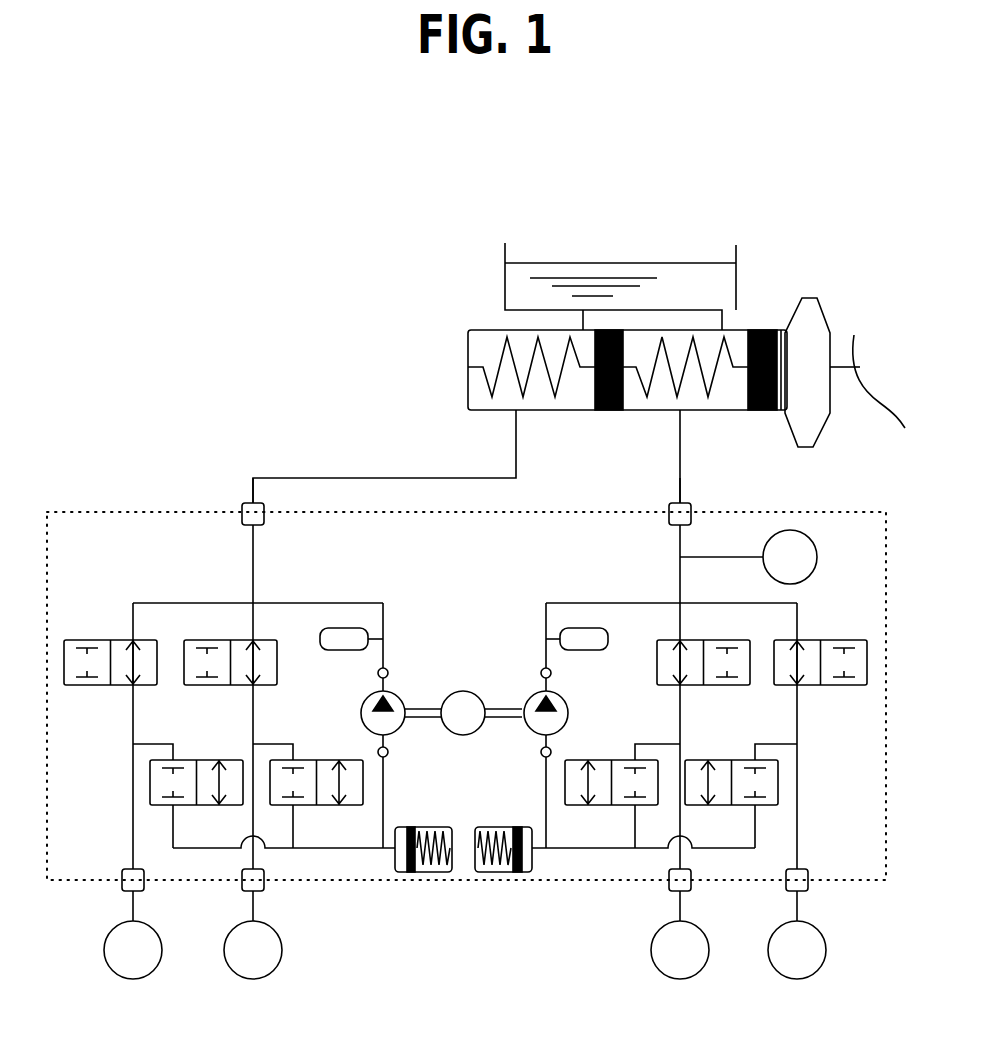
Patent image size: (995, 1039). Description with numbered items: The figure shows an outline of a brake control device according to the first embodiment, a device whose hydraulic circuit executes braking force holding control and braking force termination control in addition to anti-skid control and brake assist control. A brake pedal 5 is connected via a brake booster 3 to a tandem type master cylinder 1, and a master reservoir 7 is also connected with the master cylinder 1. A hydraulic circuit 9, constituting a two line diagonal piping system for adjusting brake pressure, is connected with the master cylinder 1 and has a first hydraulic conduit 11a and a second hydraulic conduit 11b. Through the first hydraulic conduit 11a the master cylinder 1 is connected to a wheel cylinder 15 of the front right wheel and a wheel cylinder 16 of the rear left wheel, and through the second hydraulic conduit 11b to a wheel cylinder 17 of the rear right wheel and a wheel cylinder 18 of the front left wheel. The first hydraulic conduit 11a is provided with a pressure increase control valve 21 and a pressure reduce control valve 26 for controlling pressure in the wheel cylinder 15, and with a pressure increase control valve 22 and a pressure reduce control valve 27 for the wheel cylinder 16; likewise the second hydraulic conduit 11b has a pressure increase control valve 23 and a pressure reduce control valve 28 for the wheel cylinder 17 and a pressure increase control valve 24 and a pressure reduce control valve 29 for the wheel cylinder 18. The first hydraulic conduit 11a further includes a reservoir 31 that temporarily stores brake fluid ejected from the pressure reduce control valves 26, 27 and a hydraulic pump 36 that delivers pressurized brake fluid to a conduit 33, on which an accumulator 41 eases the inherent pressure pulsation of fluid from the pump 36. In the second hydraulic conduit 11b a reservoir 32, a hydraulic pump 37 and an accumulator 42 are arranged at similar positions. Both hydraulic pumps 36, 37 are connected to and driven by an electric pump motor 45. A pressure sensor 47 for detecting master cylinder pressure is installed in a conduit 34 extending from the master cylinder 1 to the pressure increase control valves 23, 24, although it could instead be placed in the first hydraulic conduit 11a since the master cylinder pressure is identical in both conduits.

The master cylinder 1 is at (468, 350).
The brake booster 3 is at (806, 298).
The brake pedal 5 is at (890, 395).
The master reservoir 7 is at (505, 268).
The hydraulic circuit 9 is at (113, 512).
The first hydraulic conduit 11a is at (307, 566).
The second hydraulic conduit 11b is at (835, 595).
The wheel cylinder 15 is at (133, 980).
The wheel cylinder 16 is at (253, 980).
The wheel cylinder 17 is at (680, 980).
The wheel cylinder 18 is at (797, 980).
The pressure increase control valve 21 is at (75, 640).
The pressure increase control valve 22 is at (258, 640).
The pressure increase control valve 23 is at (710, 640).
The pressure increase control valve 24 is at (825, 640).
The pressure reduce control valve 26 is at (188, 760).
The pressure reduce control valve 27 is at (298, 760).
The pressure reduce control valve 28 is at (580, 760).
The pressure reduce control valve 29 is at (700, 760).
The reservoir 31 is at (405, 826).
The reservoir 32 is at (488, 826).
The conduit 33 is at (342, 603).
The conduit 34 is at (566, 603).
The hydraulic pump 36 is at (393, 692).
The hydraulic pump 37 is at (533, 692).
The accumulator 41 is at (335, 651).
The accumulator 42 is at (592, 651).
The electric pump motor 45 is at (463, 735).
The pressure sensor 47 is at (792, 530).